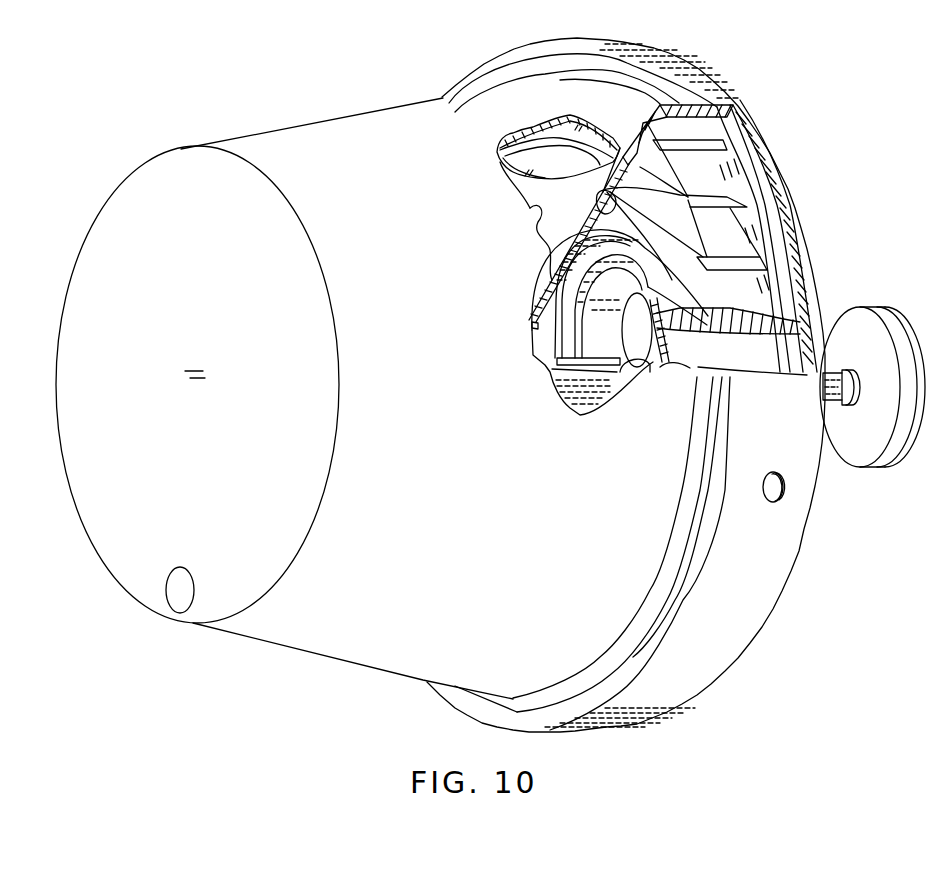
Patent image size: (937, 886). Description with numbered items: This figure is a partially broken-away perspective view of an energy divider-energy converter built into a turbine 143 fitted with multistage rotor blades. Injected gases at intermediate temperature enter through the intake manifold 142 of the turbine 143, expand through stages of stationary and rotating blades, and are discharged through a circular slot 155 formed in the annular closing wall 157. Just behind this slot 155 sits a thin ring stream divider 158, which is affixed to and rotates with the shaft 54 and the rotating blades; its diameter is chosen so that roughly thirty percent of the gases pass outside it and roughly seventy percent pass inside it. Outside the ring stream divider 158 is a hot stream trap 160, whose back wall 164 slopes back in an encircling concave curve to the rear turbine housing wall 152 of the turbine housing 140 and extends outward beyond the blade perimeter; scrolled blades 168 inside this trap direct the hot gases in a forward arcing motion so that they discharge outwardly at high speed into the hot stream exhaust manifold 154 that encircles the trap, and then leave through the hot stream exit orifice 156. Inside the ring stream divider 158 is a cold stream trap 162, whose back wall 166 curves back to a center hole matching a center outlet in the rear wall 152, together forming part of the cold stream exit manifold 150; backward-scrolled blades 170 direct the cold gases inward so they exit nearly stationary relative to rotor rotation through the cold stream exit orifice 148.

The shaft 54 is at (832, 372).
The turbine housing 140 is at (565, 42).
The intake manifold 142 is at (179, 569).
The turbine 143 is at (369, 183).
The cold stream exit orifice 148 is at (620, 360).
The cold stream exit manifold 150 is at (552, 367).
The rear turbine housing wall 152 is at (789, 230).
The hot stream exhaust manifold 154 is at (692, 95).
The circular slot 155 is at (543, 127).
The hot stream exit orifice 156 is at (782, 472).
The annular closing wall 157 is at (530, 208).
The ring stream divider 158 is at (597, 198).
The hot stream trap 160 is at (667, 241).
The cold stream trap 162 is at (644, 275).
The back wall of hot stream trap 164 is at (780, 340).
The back wall of cold stream trap 166 is at (660, 367).
The scrolled blades 168 is at (750, 212).
The scrolled blades 170 is at (520, 132).